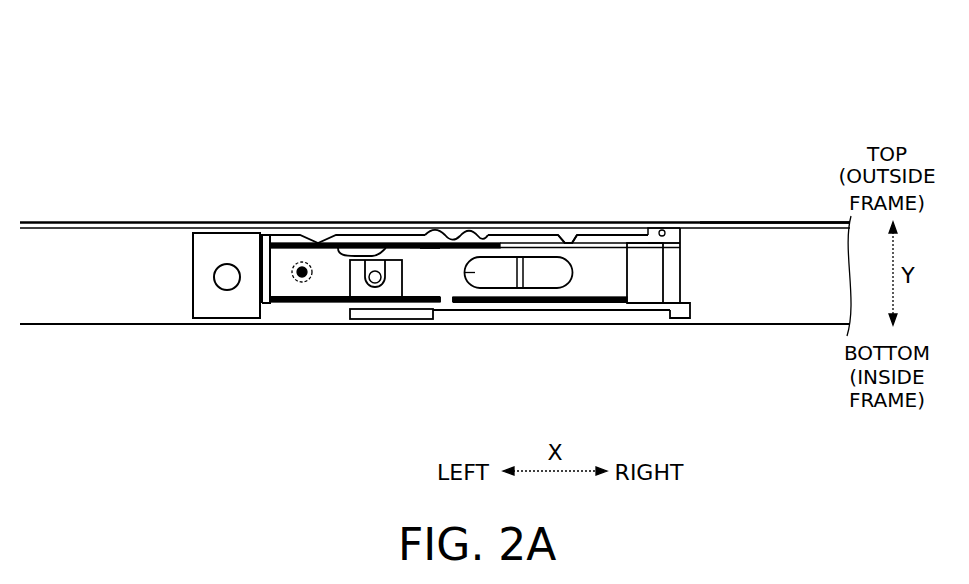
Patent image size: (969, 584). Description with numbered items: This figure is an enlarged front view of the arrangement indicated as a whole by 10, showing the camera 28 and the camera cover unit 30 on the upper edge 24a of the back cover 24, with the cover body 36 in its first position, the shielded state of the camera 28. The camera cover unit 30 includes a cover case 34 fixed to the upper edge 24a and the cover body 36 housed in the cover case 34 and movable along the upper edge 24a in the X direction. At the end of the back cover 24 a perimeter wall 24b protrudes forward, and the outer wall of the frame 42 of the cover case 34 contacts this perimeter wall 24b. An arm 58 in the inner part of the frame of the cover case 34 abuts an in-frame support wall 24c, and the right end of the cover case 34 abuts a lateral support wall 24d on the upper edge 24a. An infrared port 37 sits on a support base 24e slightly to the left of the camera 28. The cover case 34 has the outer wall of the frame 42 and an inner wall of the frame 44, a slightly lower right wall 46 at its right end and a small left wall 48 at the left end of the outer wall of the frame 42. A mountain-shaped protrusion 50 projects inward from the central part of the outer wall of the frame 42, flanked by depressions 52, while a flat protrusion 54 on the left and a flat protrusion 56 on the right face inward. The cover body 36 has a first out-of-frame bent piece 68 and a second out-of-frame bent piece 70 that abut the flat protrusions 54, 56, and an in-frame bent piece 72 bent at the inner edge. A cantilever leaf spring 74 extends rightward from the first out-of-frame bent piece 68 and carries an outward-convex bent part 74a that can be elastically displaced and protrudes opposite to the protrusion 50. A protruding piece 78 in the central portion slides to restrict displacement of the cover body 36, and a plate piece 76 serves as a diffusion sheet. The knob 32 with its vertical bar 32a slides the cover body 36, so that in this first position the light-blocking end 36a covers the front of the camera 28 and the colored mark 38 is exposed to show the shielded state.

The image forming apparatus 10 is at (711, 71).
The back cover 24 is at (807, 255).
The upper edge 24a is at (435, 276).
The perimeter wall 24b is at (740, 228).
The in-frame support wall 24c is at (380, 319).
The lateral support wall 24d is at (688, 318).
The support base 24e is at (207, 240).
The camera 28 is at (305, 283).
The camera cover unit 30 is at (538, 87).
The knob 32 is at (555, 270).
The vertical bar 32a is at (448, 277).
The cover case 34 is at (404, 235).
The cover body 36 is at (518, 235).
The end 36a is at (273, 300).
The infrared port 37 is at (227, 284).
The mark 38 is at (308, 278).
The outer wall of the frame 42 is at (620, 242).
The inner wall of the frame 44 is at (635, 310).
The right wall 46 is at (676, 268).
The left wall 48 is at (262, 236).
The protrusion 50 is at (462, 234).
The depressions 52 is at (434, 232).
The flat protrusion 54 is at (318, 242).
The flat protrusion 56 is at (588, 240).
The arm 58 is at (380, 283).
The first out-of-frame bent piece 68 is at (277, 237).
The second out-of-frame bent piece 70 is at (652, 229).
The in-frame bent piece 72 is at (590, 310).
The leaf spring 74 is at (390, 243).
The bent part 74a is at (435, 249).
The plate piece 76 is at (365, 302).
The protruding piece 78 is at (448, 299).